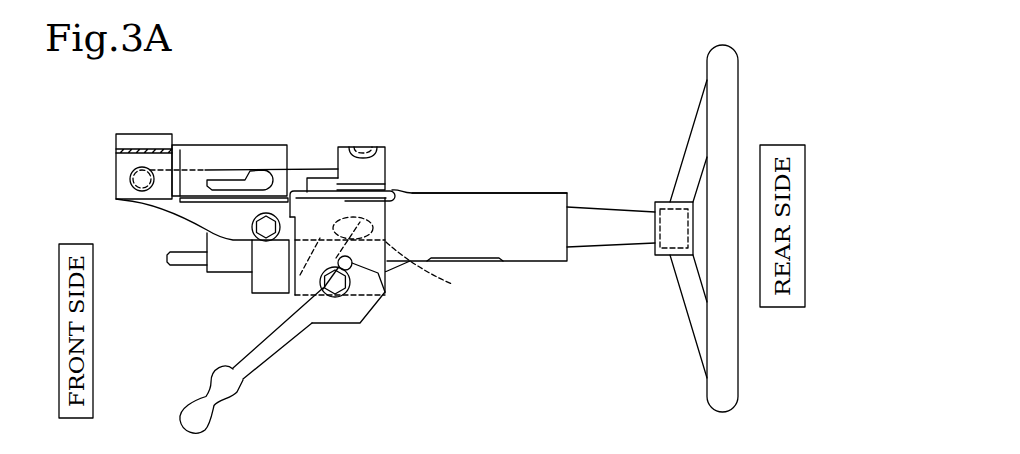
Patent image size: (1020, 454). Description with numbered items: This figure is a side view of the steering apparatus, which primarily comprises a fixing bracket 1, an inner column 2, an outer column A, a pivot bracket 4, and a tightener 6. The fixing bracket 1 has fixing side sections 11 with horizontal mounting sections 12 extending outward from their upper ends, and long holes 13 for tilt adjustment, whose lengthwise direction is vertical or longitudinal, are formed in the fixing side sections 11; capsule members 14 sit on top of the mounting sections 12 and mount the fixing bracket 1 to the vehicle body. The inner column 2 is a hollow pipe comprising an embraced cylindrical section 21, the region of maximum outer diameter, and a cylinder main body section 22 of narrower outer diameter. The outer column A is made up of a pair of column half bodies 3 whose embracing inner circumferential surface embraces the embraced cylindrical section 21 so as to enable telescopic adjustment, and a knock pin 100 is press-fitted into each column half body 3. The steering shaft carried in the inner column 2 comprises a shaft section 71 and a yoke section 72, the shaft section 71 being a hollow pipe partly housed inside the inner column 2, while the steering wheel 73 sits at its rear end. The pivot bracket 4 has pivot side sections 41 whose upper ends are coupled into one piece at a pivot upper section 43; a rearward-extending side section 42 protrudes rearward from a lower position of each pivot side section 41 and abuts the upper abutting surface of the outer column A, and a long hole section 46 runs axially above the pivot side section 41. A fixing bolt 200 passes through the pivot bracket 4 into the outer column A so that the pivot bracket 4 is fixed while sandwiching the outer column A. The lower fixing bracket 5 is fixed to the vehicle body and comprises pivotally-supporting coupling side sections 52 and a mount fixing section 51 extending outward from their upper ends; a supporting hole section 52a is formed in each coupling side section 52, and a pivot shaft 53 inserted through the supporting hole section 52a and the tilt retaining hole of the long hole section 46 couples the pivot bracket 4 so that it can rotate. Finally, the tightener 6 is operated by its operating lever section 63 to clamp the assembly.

The fixing bracket 1 is at (366, 137).
The inner column 2 is at (448, 184).
The column half body 3 is at (244, 299).
The pivot bracket 4 is at (224, 136).
The lower fixing bracket 5 is at (155, 125).
The tightener 6 is at (283, 361).
The fixing side section 11 is at (346, 322).
The mounting section 12 is at (316, 190).
The long hole 13 is at (383, 274).
The capsule member 14 is at (365, 186).
The embraced cylindrical section 21 is at (203, 262).
The cylinder main body section 22 is at (488, 191).
The pivot side section 41 is at (262, 158).
The rearward-extending side section 42 is at (444, 267).
The pivot upper section 43 is at (193, 150).
The long hole section 46 is at (180, 160).
The mount fixing section 51 is at (130, 146).
The pivotally-supporting coupling side section 52 is at (123, 167).
The supporting hole section 52a is at (143, 191).
The pivot shaft 53 is at (131, 183).
The operating lever section 63 is at (255, 369).
The shaft section 71 is at (600, 212).
The yoke section 72 is at (170, 265).
The steering wheel 73 is at (700, 130).
The knock pin 100 is at (375, 228).
The fixing bolt 200 is at (267, 228).
The outer column A is at (246, 278).